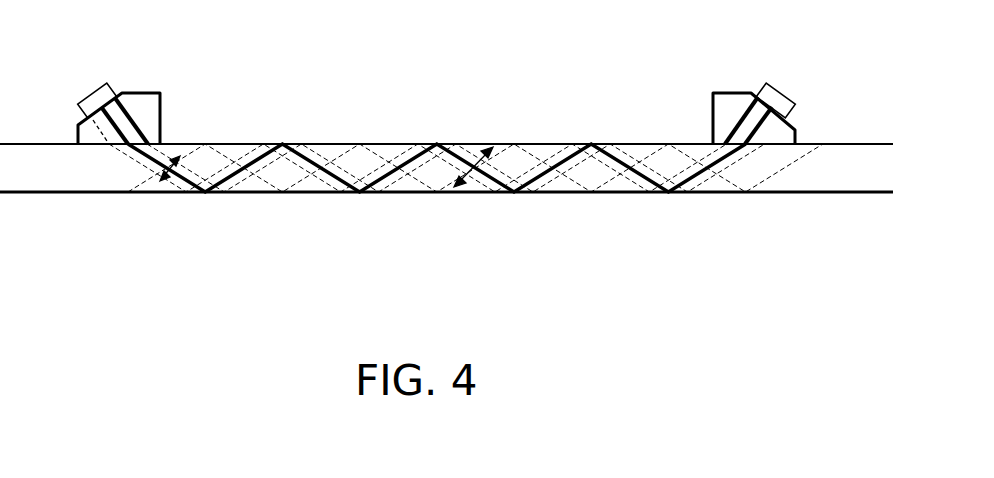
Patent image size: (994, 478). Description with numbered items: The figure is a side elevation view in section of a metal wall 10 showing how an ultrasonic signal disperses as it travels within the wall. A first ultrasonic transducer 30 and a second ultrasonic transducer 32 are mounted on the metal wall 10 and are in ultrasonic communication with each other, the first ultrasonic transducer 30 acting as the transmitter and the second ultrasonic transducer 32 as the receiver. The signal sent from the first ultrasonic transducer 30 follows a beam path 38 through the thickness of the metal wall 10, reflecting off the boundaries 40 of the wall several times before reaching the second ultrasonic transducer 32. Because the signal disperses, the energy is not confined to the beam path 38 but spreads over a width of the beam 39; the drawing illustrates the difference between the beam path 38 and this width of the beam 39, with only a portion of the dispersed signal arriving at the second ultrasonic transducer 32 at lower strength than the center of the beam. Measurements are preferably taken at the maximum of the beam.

The metal wall 10 is at (388, 193).
The first ultrasonic transducer 30 is at (137, 92).
The second ultrasonic transducer 32 is at (742, 92).
The beam path 38 is at (268, 144).
The width of the beam 39 is at (163, 178).
The boundaries of the metal wall 40 is at (57, 144).